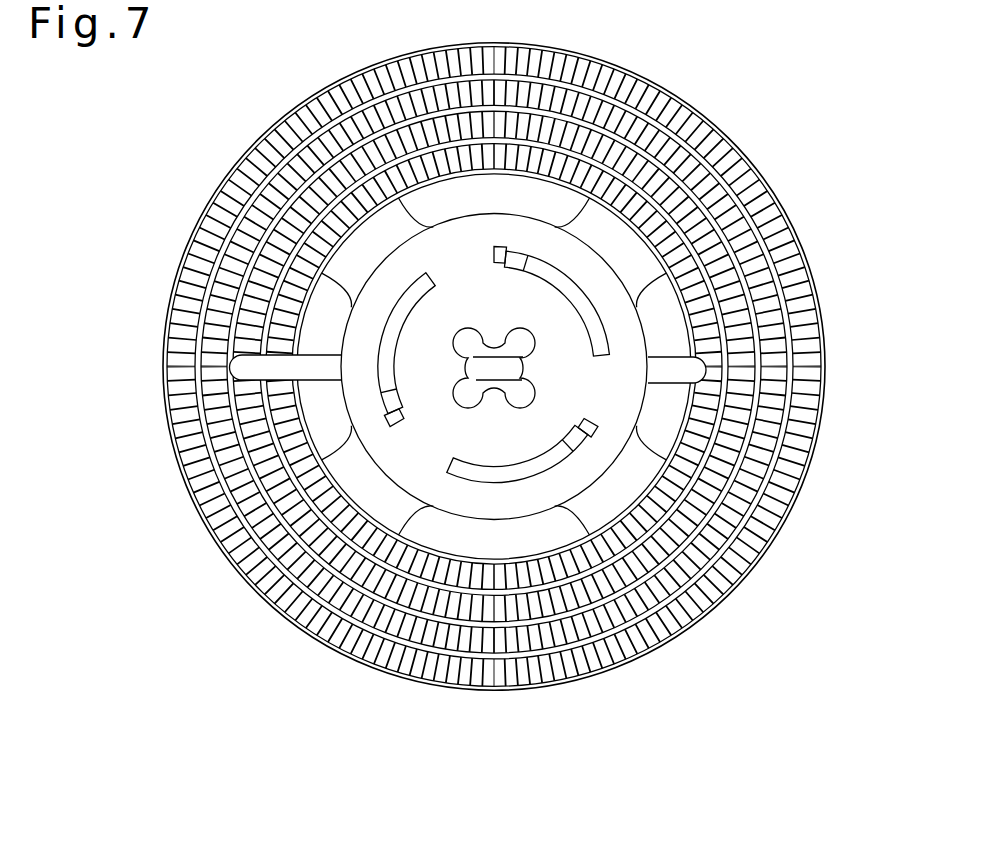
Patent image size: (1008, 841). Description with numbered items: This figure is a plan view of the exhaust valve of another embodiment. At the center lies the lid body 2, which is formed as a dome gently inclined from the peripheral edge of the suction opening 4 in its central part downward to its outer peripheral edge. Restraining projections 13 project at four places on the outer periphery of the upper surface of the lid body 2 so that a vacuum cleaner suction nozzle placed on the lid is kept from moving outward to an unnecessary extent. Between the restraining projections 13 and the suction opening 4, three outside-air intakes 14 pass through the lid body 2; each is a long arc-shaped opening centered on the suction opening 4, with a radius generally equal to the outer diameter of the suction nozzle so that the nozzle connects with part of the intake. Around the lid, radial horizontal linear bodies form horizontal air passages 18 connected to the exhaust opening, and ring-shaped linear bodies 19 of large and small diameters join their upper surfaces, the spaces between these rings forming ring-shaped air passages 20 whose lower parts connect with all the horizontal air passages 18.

The lid body 2 is at (567, 268).
The suction opening 4 is at (521, 396).
The restraining projection 13 is at (645, 270).
The outside-air intake 14 is at (577, 322).
The horizontal air passage 18 is at (315, 638).
The ring-shaped linear body 19 is at (787, 515).
The ring-shaped air passage 20 is at (418, 640).